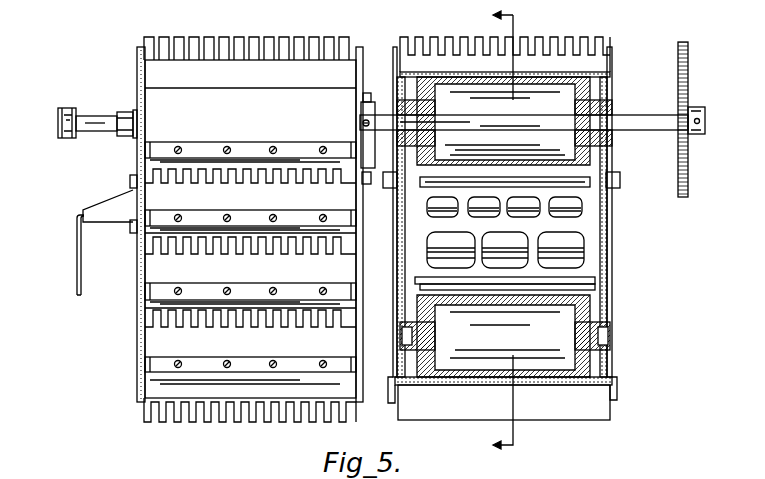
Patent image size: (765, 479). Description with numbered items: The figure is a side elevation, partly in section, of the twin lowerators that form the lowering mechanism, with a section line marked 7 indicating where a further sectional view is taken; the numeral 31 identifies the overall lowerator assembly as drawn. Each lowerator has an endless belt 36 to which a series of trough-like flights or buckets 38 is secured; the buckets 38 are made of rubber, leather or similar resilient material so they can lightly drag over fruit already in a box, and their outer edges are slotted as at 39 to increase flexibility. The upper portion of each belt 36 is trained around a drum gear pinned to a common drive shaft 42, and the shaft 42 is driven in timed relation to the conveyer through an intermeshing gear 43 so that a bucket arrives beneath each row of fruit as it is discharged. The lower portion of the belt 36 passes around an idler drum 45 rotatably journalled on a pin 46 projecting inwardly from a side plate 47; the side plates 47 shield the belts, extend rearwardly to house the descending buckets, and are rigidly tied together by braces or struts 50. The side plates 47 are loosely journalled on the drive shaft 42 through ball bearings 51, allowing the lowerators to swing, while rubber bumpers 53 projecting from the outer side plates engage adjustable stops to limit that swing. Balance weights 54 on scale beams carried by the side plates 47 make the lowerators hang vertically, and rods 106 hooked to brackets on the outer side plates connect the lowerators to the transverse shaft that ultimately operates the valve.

The drying unit frame 31 is at (118, 65).
The endless belt 36 is at (157, 345).
The trough like flights or buckets 38 is at (418, 67).
The slots 39 is at (168, 408).
The drive shaft 42 is at (630, 116).
The gear 43 is at (689, 62).
The idler drum 45 is at (588, 362).
The pin 46 is at (607, 328).
The side plate 47 is at (137, 291).
The braces or struts 50 is at (592, 218).
The ball bearing 51 is at (606, 102).
The rubber bumper 53 is at (363, 124).
The balance weight 54 is at (361, 110).
The rod 106 is at (75, 281).
The section line 7- 7 is at (493, 231).